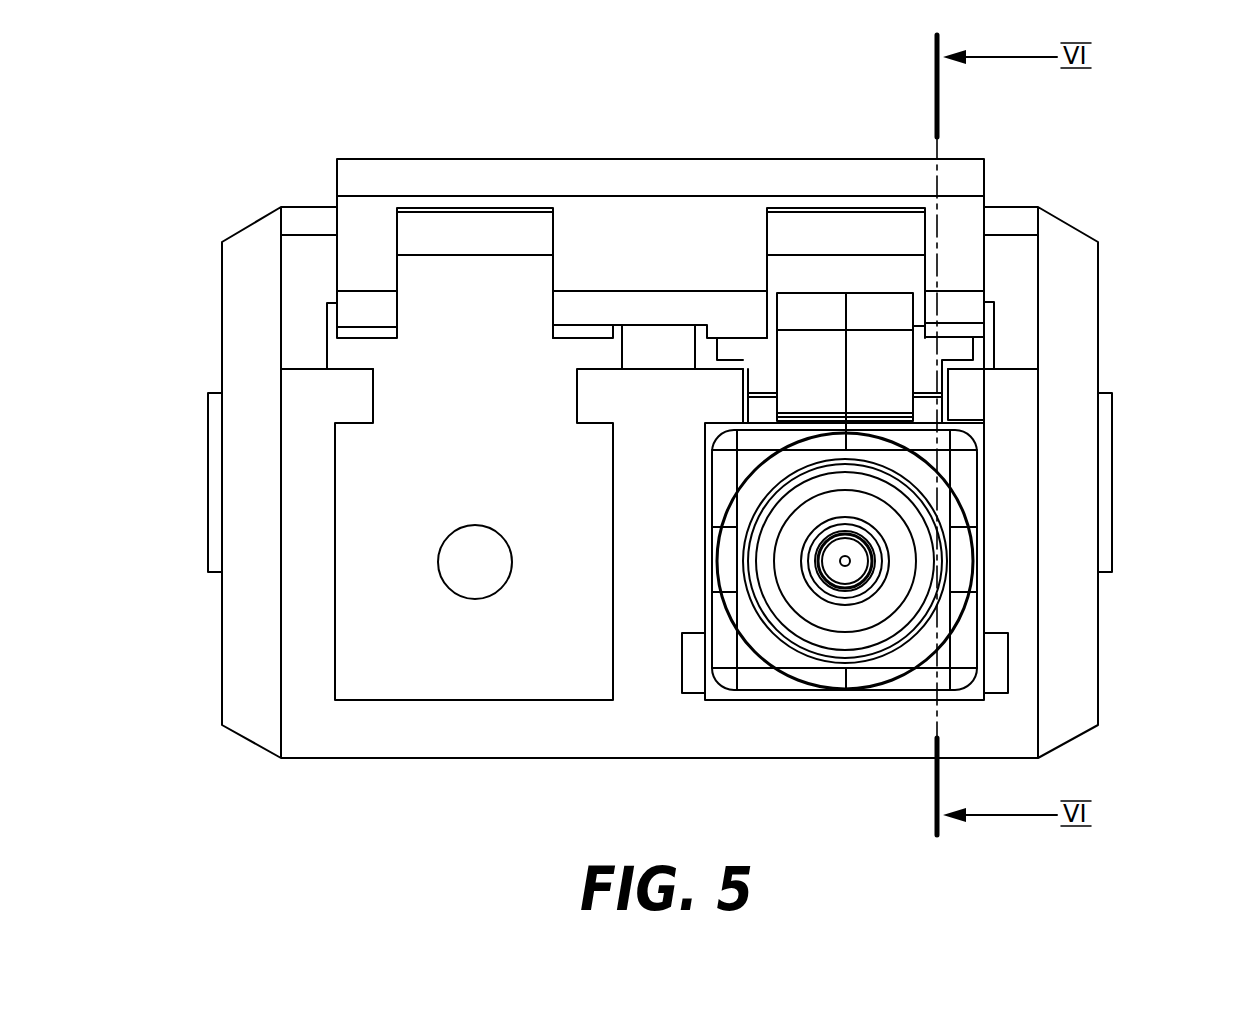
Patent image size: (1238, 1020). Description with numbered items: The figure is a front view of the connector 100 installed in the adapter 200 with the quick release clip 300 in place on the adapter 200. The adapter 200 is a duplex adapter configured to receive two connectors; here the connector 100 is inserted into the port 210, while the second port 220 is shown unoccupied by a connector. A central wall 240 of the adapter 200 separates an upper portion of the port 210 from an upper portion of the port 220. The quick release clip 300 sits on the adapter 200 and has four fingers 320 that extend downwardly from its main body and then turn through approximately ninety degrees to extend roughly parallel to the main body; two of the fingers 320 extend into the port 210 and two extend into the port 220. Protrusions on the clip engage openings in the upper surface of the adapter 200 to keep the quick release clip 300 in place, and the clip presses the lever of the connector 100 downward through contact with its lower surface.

The connector 100 is at (890, 367).
The adapter 200 is at (243, 305).
The port 210 is at (993, 662).
The second port 220 is at (373, 672).
The central wall 240 is at (660, 347).
The quick release clip 300 is at (642, 243).
The finger 320 is at (367, 338).